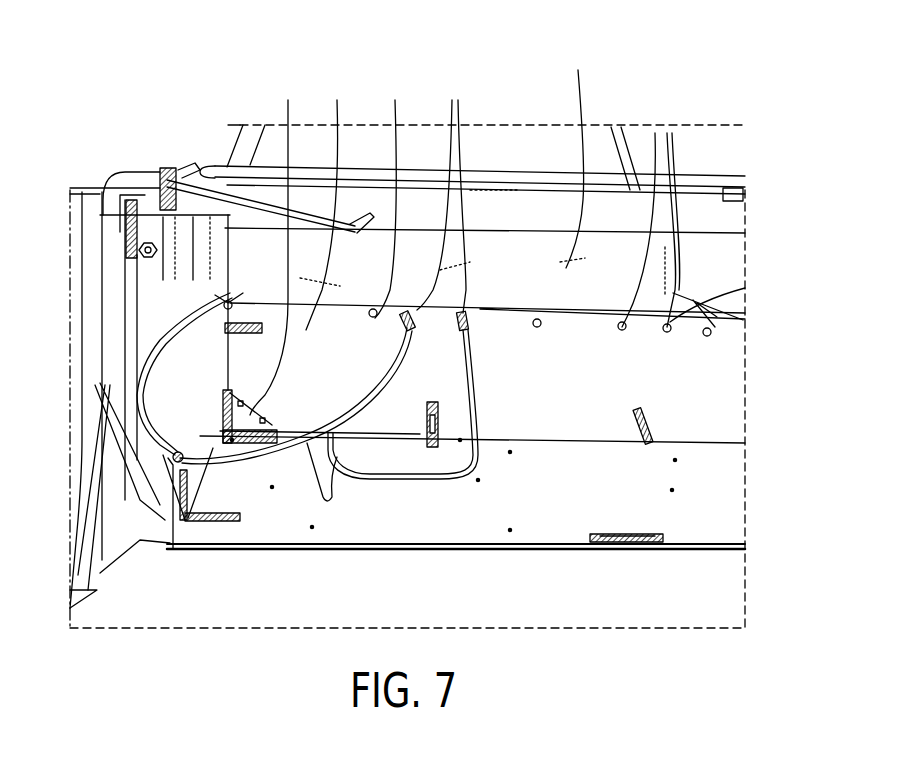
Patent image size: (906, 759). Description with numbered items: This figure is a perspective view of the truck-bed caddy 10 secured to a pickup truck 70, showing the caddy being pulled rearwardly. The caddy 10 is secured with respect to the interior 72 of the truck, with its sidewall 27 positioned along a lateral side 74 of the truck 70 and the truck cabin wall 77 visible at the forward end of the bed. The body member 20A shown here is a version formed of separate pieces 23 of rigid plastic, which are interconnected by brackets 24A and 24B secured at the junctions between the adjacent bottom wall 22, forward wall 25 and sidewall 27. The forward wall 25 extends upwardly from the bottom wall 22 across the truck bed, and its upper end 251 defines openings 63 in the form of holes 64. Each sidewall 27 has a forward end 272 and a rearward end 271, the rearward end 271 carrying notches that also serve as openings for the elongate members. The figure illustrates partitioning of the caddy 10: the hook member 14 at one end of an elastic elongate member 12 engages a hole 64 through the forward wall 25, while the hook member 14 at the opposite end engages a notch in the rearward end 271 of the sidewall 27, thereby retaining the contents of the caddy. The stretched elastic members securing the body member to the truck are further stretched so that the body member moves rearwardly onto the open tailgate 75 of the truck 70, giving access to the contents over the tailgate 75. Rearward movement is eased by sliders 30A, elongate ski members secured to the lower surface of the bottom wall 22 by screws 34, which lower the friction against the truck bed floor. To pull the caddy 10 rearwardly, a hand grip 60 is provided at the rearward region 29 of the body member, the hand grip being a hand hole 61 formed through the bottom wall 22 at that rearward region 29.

The caddy 10 is at (755, 277).
The elongate member 12 is at (327, 497).
The hook member 14 is at (173, 458).
The body member 20A is at (726, 398).
The bottom wall 22 is at (733, 505).
The separate pieces 23 is at (735, 445).
The bracket 24A is at (642, 412).
The bracket 24B is at (279, 246).
The forward wall 25 is at (745, 290).
The upper end 251 is at (331, 209).
The sidewall 27 is at (137, 343).
The rearward end 271 is at (160, 503).
The forward end 272 is at (230, 303).
The rearward region 29 is at (547, 540).
The sliders 30A is at (733, 553).
The screws 34 is at (722, 532).
The hand grip 60 is at (658, 548).
The hand hole 61 is at (632, 548).
The openings 63 is at (406, 204).
The holes 64 is at (645, 217).
The pickup truck 70 is at (538, 145).
The interior 72 is at (153, 227).
The lateral side 74 is at (98, 272).
The tailgate 75 is at (117, 594).
The truck cabin wall 77 is at (578, 155).